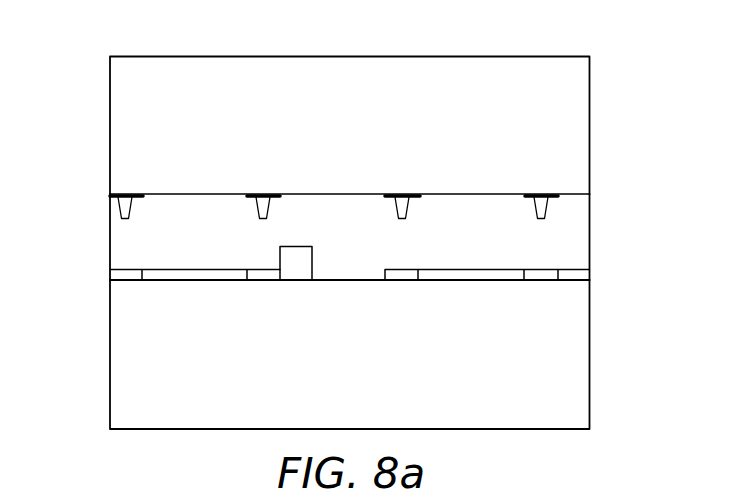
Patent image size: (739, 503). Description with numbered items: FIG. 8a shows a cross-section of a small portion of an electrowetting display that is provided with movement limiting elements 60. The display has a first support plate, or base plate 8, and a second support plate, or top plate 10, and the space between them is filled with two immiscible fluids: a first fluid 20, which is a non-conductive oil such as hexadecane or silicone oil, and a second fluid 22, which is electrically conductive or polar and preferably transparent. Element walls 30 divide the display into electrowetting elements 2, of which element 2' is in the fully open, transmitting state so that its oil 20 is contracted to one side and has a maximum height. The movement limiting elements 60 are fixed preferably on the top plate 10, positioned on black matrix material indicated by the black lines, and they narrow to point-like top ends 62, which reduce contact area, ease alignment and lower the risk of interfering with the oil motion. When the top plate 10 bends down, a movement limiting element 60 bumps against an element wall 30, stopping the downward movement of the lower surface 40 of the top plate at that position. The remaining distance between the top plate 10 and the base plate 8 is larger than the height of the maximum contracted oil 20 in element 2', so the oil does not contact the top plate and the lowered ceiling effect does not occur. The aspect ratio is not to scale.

The second support plate 10 is at (578, 126).
The second fluid 22 is at (578, 231).
The first support plate 8 is at (578, 351).
The lower surface 40 is at (470, 193).
The point-like top end 62 is at (261, 220).
The movement limiting element 60 is at (398, 213).
The first fluid 20 is at (288, 253).
The element wall 30 is at (113, 273).
The electrowetting element 2 is at (487, 294).
The fully open element 2' is at (348, 296).